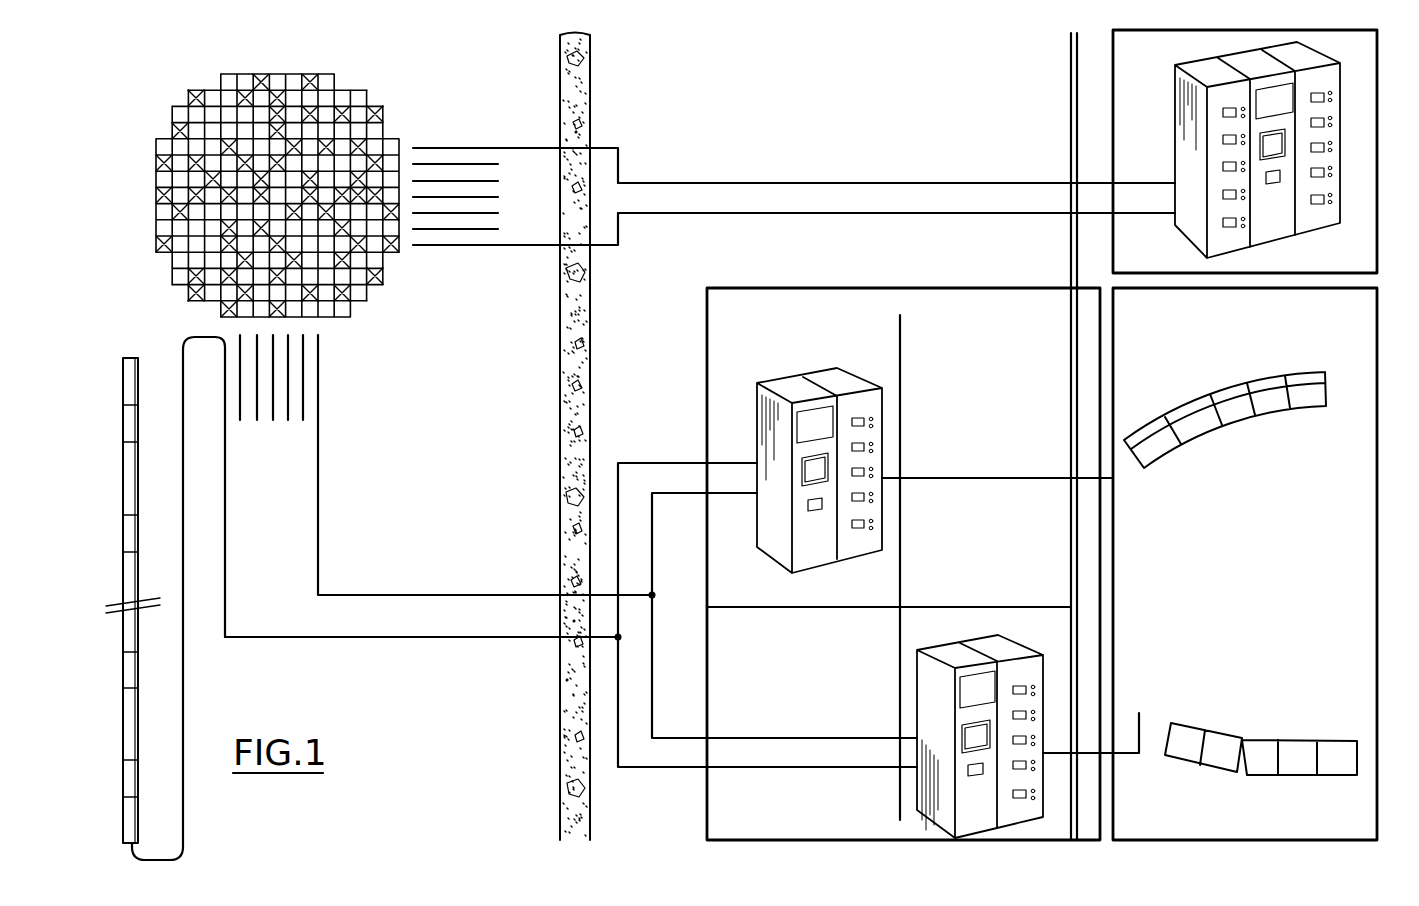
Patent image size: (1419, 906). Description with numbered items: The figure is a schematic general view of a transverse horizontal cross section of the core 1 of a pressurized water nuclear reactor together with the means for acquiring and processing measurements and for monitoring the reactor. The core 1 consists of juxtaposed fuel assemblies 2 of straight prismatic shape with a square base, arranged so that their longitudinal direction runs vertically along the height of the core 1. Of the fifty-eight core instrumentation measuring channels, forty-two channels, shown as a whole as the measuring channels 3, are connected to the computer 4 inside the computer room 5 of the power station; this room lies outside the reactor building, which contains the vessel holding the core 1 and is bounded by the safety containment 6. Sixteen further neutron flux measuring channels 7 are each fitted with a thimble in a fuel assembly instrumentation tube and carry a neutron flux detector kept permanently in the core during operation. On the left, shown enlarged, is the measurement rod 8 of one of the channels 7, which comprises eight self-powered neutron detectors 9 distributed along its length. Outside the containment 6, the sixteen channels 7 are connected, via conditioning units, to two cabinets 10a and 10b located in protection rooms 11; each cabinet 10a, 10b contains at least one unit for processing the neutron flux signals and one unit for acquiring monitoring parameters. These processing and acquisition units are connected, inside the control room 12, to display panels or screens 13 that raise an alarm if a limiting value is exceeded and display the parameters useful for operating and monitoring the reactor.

The core 1 is at (405, 108).
The fuel assemblies 2 is at (243, 133).
The core instrumentation measuring channels 3 is at (497, 197).
The computer 4 is at (1280, 232).
The computer room 5 is at (1113, 148).
The safety containment 6 is at (590, 70).
The neutron flux measuring channels 7 is at (273, 412).
The measurement rod 8 is at (135, 728).
The self-powered neutron detectors 9 is at (133, 530).
The cabinet 10a is at (807, 405).
The cabinet 10b is at (960, 650).
The protection rooms 11 is at (903, 564).
The control room 12 is at (1245, 564).
The display panels or screens 13 is at (1228, 420).